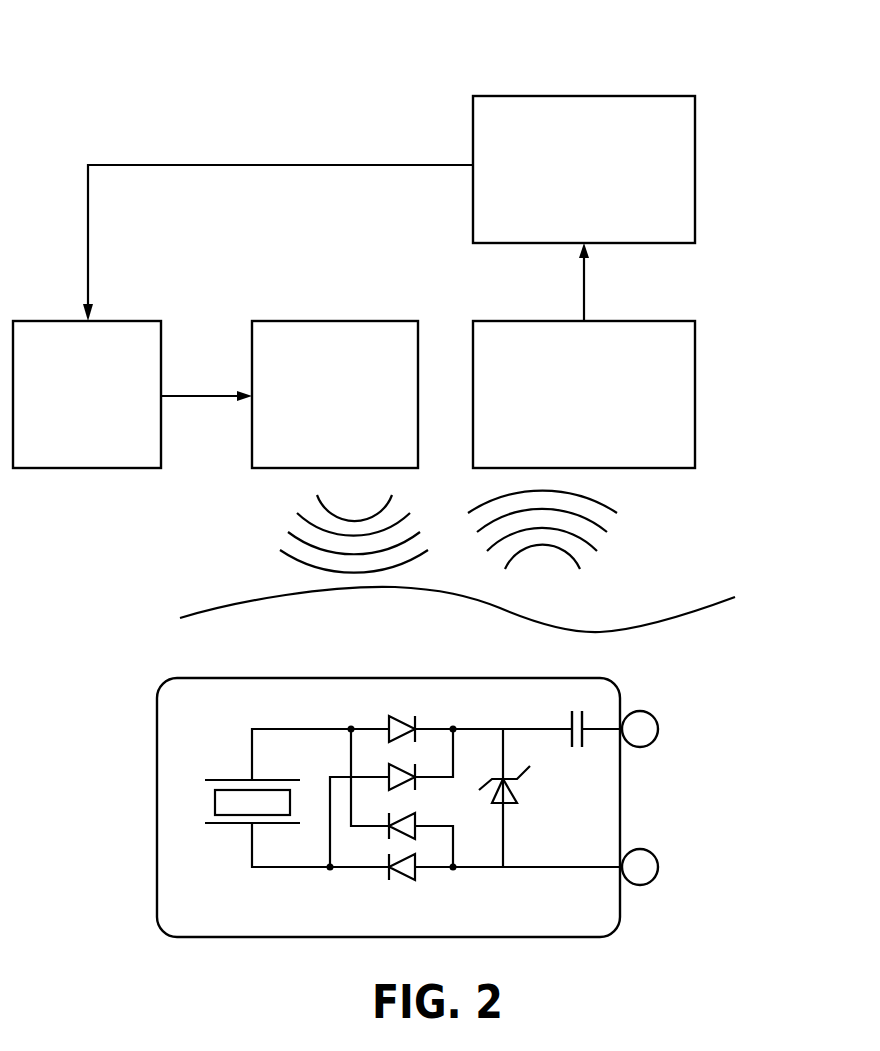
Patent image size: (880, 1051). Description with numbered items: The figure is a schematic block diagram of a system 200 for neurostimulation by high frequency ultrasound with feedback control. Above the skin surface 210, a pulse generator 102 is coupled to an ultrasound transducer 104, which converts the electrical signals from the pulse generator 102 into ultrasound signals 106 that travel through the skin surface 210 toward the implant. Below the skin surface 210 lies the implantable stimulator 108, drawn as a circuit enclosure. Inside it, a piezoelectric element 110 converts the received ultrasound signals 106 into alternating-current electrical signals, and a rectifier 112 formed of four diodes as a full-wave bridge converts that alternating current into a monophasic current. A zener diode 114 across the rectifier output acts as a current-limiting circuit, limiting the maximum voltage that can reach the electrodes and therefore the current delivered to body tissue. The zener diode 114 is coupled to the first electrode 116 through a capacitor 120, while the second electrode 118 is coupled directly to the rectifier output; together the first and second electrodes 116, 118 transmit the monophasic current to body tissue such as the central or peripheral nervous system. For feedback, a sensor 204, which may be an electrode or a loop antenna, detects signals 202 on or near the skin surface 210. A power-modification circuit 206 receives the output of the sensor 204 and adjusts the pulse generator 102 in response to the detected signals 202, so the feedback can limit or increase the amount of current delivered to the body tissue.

The system 200 is at (116, 72).
The pulse generator 102 is at (109, 409).
The ultrasound transducer 104 is at (356, 409).
The ultrasound signals 106 is at (240, 532).
The implantable stimulator 108 is at (502, 912).
The piezoelectric element 110 is at (213, 800).
The rectifier 112 is at (390, 719).
The zener diode 114 is at (512, 788).
The first electrode 116 is at (658, 728).
The second electrode 118 is at (658, 868).
The capacitor 120 is at (590, 718).
The detected signals 202 is at (652, 532).
The sensor 204 is at (605, 409).
The power-modification circuit 206 is at (605, 184).
The skin surface 210 is at (195, 611).